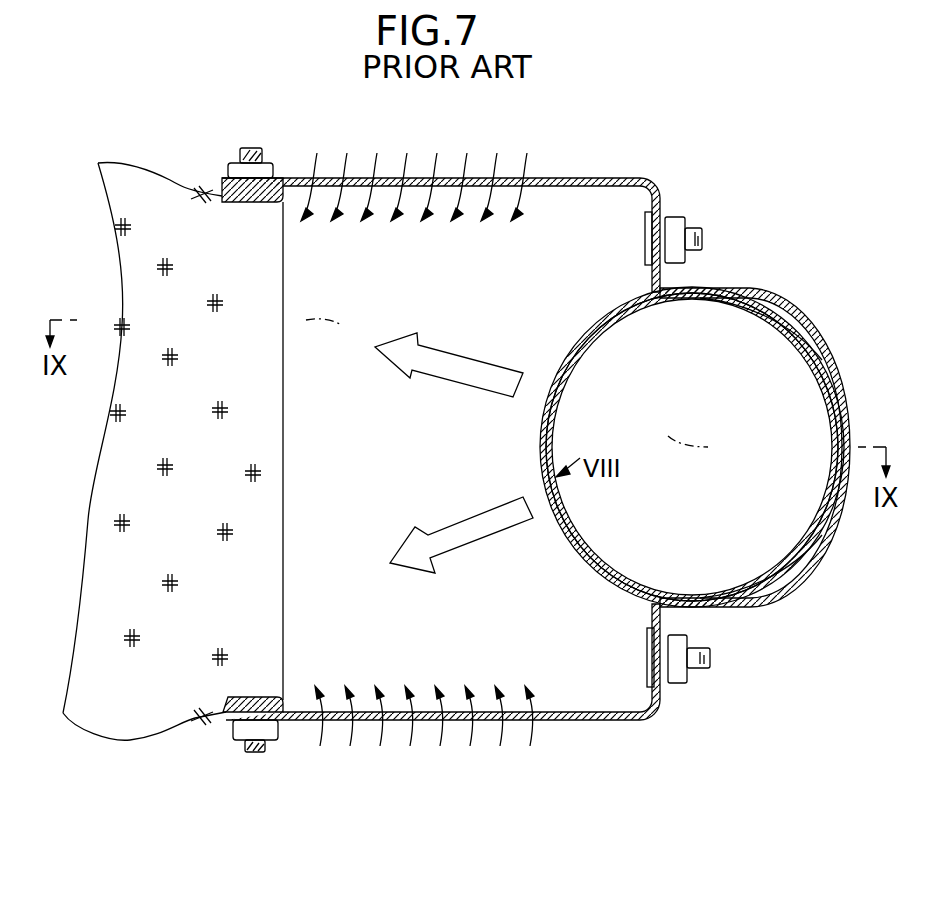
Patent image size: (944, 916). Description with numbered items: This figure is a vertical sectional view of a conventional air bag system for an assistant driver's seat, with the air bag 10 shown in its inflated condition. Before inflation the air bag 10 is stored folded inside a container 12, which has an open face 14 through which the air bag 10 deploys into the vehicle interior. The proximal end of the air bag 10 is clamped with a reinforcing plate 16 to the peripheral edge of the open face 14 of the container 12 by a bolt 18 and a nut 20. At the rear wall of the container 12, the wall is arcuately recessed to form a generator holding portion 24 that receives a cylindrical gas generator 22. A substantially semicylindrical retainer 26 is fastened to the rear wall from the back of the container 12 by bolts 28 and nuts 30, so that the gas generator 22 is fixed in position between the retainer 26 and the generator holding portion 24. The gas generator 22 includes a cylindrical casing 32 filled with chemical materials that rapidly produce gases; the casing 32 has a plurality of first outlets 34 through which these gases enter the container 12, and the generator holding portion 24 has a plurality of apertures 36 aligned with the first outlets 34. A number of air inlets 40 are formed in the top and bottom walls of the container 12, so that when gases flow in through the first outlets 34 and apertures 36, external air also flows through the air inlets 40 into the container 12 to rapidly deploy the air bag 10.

The air bag 10 is at (95, 735).
The container 12 is at (634, 721).
The open face 14 is at (272, 532).
The reinforcing plate 16 is at (300, 721).
The bolt 18 is at (247, 752).
The nut 20 is at (272, 740).
The gas generator 22 is at (795, 575).
The generator holding portion 24 is at (575, 337).
The retainer 26 is at (758, 610).
The bolts 28 is at (700, 232).
The nuts 30 is at (678, 214).
The casing 32 is at (750, 587).
The first outlets 34 is at (557, 402).
The apertures 36 is at (535, 397).
The air inlets 40 is at (318, 180).